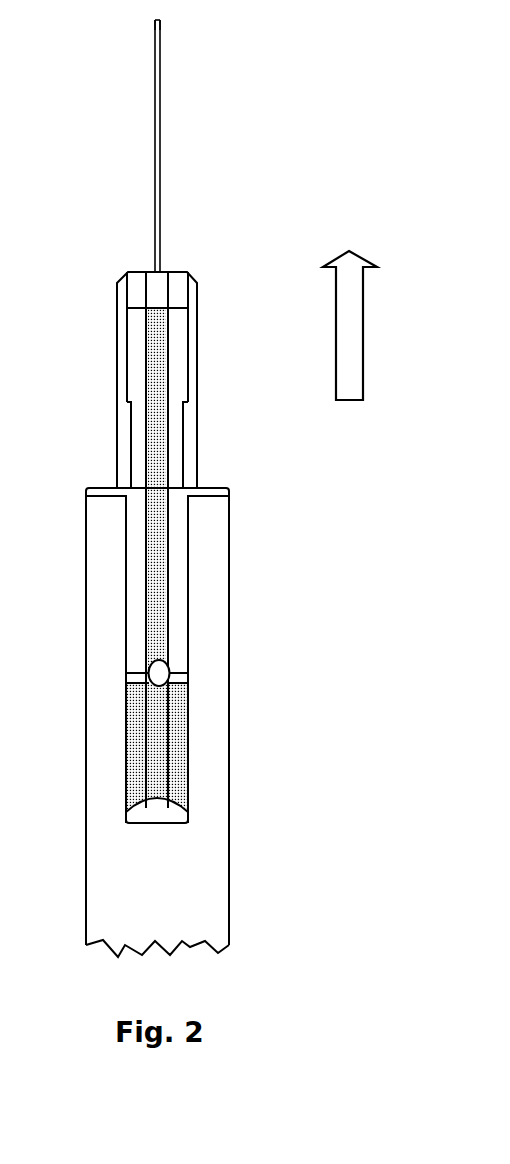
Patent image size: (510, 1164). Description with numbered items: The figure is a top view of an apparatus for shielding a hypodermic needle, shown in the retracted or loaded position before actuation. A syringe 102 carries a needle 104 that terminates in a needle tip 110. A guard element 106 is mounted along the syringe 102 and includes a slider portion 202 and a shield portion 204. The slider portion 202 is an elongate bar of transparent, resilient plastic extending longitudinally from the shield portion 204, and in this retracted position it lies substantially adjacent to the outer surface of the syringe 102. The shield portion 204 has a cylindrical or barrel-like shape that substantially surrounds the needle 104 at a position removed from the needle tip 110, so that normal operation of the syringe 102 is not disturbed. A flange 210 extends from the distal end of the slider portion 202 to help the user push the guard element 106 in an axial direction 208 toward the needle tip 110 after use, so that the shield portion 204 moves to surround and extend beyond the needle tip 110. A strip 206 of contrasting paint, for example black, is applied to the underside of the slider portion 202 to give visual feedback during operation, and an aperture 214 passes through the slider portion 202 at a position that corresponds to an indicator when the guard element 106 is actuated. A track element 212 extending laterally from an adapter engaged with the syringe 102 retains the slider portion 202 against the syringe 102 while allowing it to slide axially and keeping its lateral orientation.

The syringe 102 is at (217, 598).
The needle 104 is at (161, 145).
The guard element 106 is at (77, 373).
The needle tip 110 is at (161, 21).
The slider portion 202 is at (189, 543).
The shield portion 204 is at (183, 293).
The strip 206 is at (163, 362).
The axial direction 208 is at (355, 328).
The flange 210 is at (182, 818).
The track element 212 is at (193, 443).
The aperture 214 is at (160, 670).